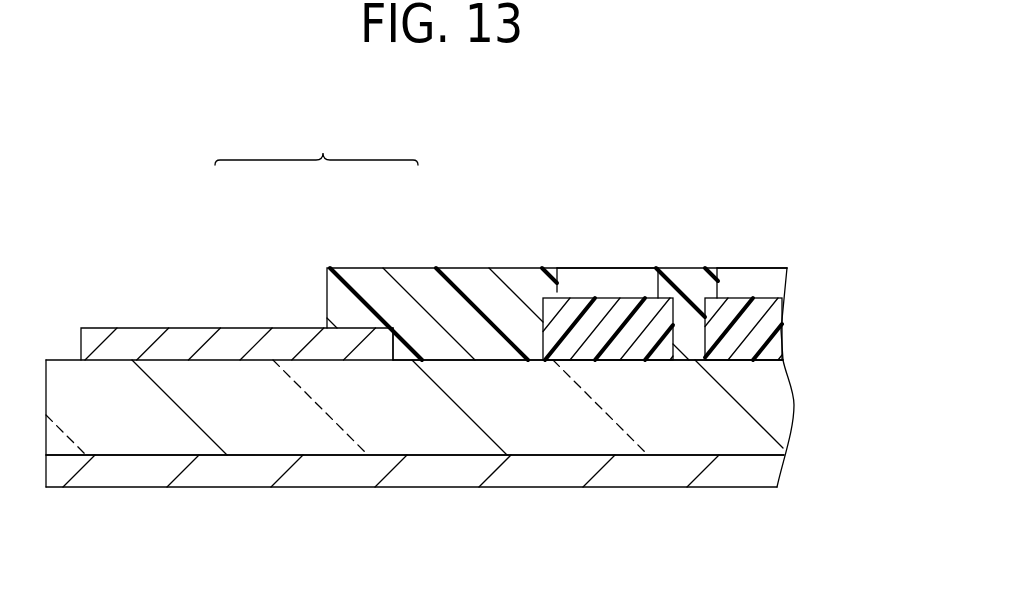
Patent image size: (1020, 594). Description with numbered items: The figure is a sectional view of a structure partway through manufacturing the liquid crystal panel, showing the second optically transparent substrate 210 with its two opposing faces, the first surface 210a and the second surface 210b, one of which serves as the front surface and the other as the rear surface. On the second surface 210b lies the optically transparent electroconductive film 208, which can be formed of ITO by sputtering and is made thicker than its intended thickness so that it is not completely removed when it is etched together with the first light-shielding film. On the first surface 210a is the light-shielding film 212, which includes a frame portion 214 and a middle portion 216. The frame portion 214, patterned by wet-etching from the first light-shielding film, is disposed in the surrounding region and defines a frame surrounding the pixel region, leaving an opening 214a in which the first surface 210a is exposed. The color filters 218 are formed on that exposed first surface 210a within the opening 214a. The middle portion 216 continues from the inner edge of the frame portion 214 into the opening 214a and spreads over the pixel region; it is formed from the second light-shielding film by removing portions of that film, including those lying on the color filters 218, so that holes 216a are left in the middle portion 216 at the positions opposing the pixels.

The optically transparent electroconductive film 208 is at (240, 476).
The second optically transparent substrate 210 is at (785, 407).
The first surface 210a is at (487, 360).
The second surface 210b is at (528, 457).
The light-shielding film 212 is at (316, 140).
The frame portion 214 is at (248, 328).
The opening 214a is at (396, 345).
The middle portion 216 is at (427, 282).
The holes 216a is at (560, 290).
The color filters 218 is at (610, 308).